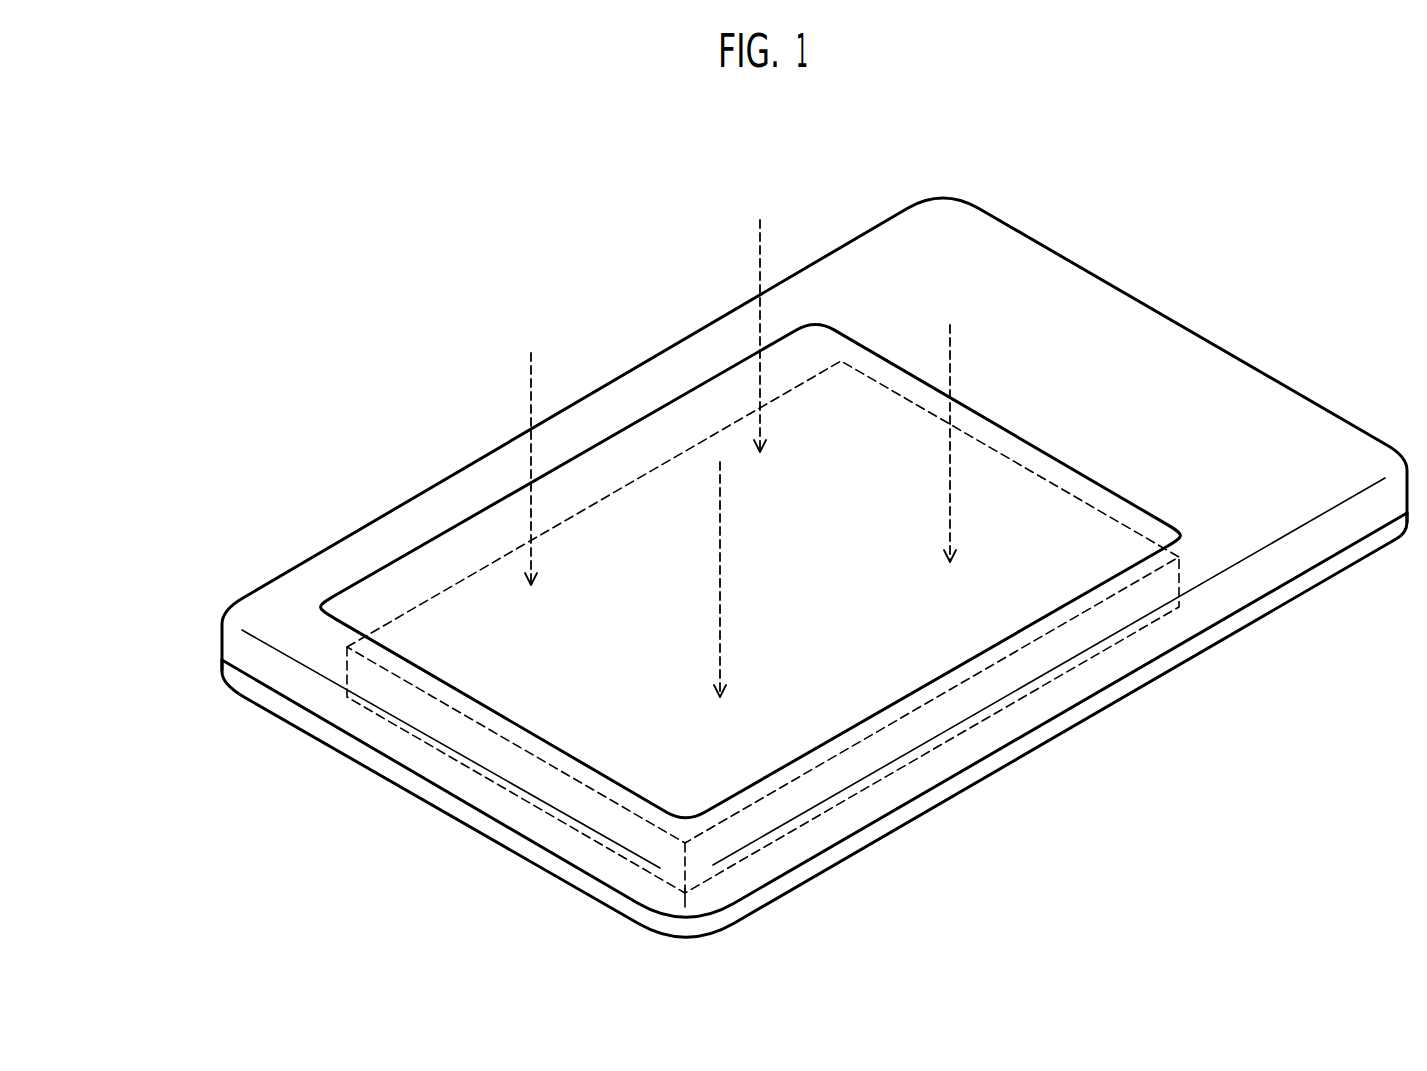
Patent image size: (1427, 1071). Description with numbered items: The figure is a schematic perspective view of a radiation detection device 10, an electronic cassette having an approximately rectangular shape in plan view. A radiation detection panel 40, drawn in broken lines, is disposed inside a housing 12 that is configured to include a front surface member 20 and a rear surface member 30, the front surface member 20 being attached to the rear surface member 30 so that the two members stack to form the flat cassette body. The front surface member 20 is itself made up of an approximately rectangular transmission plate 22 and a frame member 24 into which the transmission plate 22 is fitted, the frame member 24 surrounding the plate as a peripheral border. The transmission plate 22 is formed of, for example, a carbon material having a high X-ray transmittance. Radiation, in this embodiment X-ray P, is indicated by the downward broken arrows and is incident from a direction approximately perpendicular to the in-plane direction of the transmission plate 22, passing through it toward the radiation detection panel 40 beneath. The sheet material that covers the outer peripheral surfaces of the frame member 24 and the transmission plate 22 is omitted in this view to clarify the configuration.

The radiation detection device 10 is at (1140, 215).
The housing 12 is at (113, 638).
The front surface member 20 is at (222, 648).
The transmission plate 22 is at (427, 565).
The frame member 24 is at (287, 595).
The rear surface member 30 is at (222, 685).
The radiation detection panel 40 is at (962, 733).
The X-ray P is at (531, 372).